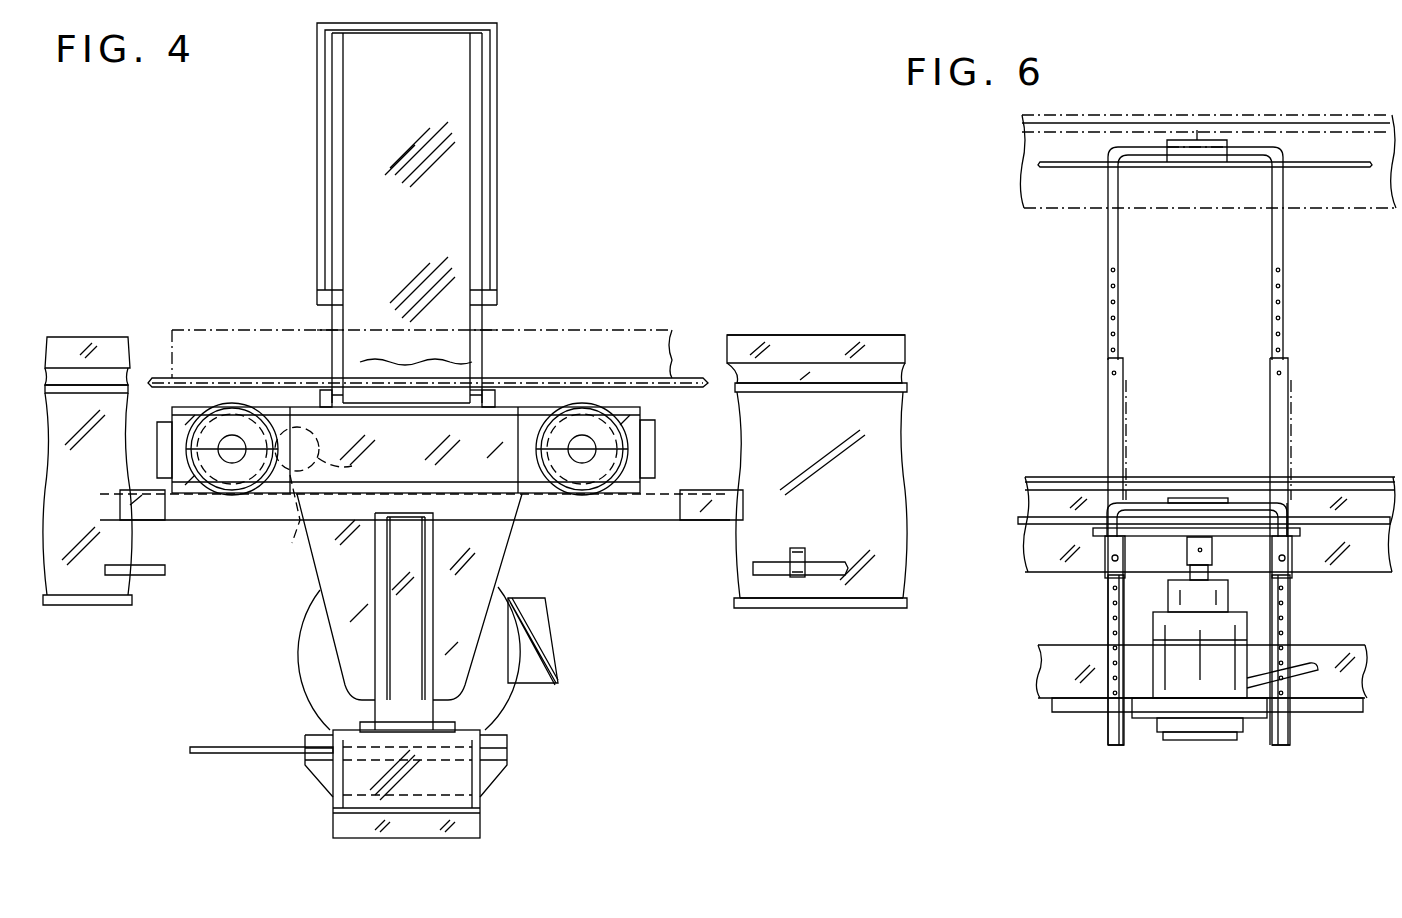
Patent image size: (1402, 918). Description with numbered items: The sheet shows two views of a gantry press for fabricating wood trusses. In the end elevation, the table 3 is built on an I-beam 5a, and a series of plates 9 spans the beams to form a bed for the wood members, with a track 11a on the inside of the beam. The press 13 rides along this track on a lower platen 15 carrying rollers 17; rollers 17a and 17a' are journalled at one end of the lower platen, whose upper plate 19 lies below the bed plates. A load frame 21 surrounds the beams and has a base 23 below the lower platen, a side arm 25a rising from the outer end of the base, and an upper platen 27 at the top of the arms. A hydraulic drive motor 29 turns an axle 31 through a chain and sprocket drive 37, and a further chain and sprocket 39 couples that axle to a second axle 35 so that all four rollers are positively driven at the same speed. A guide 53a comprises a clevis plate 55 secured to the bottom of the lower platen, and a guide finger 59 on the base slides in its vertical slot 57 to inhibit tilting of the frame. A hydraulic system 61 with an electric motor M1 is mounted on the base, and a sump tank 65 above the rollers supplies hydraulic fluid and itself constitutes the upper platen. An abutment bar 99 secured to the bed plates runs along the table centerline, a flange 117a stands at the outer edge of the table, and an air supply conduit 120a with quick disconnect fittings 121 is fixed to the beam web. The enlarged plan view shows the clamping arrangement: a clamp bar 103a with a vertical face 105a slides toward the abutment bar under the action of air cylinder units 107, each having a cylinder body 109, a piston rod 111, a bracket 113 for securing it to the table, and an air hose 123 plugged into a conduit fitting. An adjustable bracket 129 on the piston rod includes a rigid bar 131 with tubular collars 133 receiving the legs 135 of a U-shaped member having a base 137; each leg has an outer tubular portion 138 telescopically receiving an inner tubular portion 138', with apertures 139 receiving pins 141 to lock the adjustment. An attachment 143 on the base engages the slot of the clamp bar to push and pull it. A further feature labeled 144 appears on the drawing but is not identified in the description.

In FIG. 4, the table 3 is at (907, 440).
In FIG. 4, the I-beam 5a is at (906, 573).
In FIG. 4, the plates 9 is at (700, 395).
In FIG. 4, the track 11a is at (150, 520).
In FIG. 4, the press 13 is at (517, 187).
In FIG. 4, the lower platen 15 is at (505, 398).
In FIG. 4, the rollers 17 is at (608, 495).
In FIG. 4, the roller 17a is at (232, 522).
In FIG. 4, the roller 17a' is at (575, 508).
In FIG. 4, the upper plate 19 is at (320, 397).
In FIG. 4, the load frame 21 is at (331, 318).
In FIG. 4, the base 23 is at (417, 838).
In FIG. 4, the side arm 25a is at (378, 235).
In FIG. 4, the upper platen 27 is at (490, 310).
In FIG. 4, the hydraulic drive motor 29 is at (355, 468).
In FIG. 4, the axle 31 is at (216, 438).
In FIG. 4, the axle 35 is at (598, 445).
In FIG. 4, the chain and sprocket drive 37 is at (294, 540).
In FIG. 4, the chain and sprocket 39 is at (544, 416).
In FIG. 4, the guide 53a is at (330, 648).
In FIG. 4, the clevis plate 55 is at (345, 672).
In FIG. 4, the vertical slot 57 is at (395, 600).
In FIG. 4, the guide finger 59 is at (423, 719).
In FIG. 4, the hydraulic system 61 is at (562, 648).
In FIG. 4, the sump tank 65 is at (500, 146).
In FIG. 4, the abutment bar 99 is at (195, 328).
In FIG. 4, the electric motor M1 is at (325, 702).
In FIG. 4, the flange 117a is at (875, 363).
In FIG. 6, the flange 117a is at (1063, 714).
In FIG. 4, the air supply conduit 120a is at (834, 577).
In FIG. 4, the quick disconnect fittings 121 is at (806, 553).
In FIG. 6, the quick disconnect fittings 121 is at (1297, 575).
In FIG. 6, the clamp bar 103a is at (1356, 212).
In FIG. 6, the vertical face 105a is at (1283, 115).
In FIG. 6, the air cylinder units 107 is at (1308, 655).
In FIG. 6, the cylinder body 109 is at (1180, 665).
In FIG. 6, the piston rod 111 is at (1240, 578).
In FIG. 6, the bracket 113 is at (1212, 740).
In FIG. 6, the air hose 123 is at (1312, 674).
In FIG. 6, the adjustable bracket 129 is at (1293, 342).
In FIG. 6, the rigid bar 131 is at (1297, 573).
In FIG. 6, the tubular collars 133 is at (1105, 578).
In FIG. 6, the legs 135 is at (1107, 746).
In FIG. 6, the base 137 is at (1152, 502).
In FIG. 6, the outer tubular portion 138 is at (1195, 498).
In FIG. 6, the inner tubular portion 138' is at (1329, 485).
In FIG. 6, the apertures 139 is at (1281, 305).
In FIG. 6, the pins 141 is at (1252, 553).
In FIG. 6, the attachment 143 is at (1199, 139).
In FIG. 6, the hole 144 is at (1283, 372).